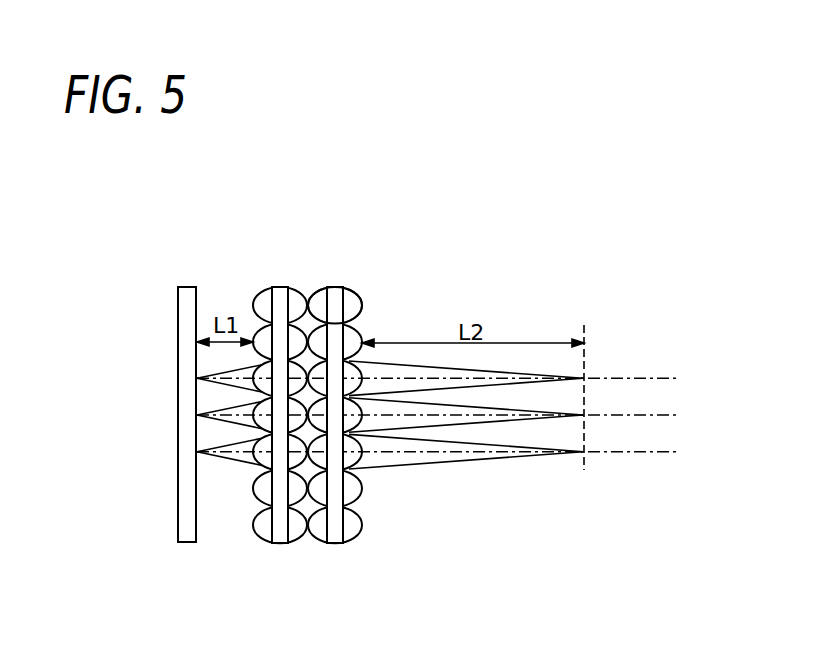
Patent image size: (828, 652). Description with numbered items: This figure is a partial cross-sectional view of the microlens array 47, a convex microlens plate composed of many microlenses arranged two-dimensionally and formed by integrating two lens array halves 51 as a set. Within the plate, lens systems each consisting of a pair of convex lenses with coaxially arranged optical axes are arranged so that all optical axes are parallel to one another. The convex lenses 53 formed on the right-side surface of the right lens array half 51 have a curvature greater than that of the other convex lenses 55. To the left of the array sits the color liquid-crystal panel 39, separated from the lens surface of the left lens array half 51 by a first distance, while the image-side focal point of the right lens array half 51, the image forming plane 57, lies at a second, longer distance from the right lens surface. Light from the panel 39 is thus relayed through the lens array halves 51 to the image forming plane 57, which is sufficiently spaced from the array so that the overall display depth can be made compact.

The color liquid-crystal panel 39 is at (178, 287).
The microlens array 47 is at (321, 382).
The lens array half 51 is at (287, 404).
The convex lens 53 is at (365, 303).
The convex lens 55 is at (258, 290).
The image forming plane 57 is at (586, 327).